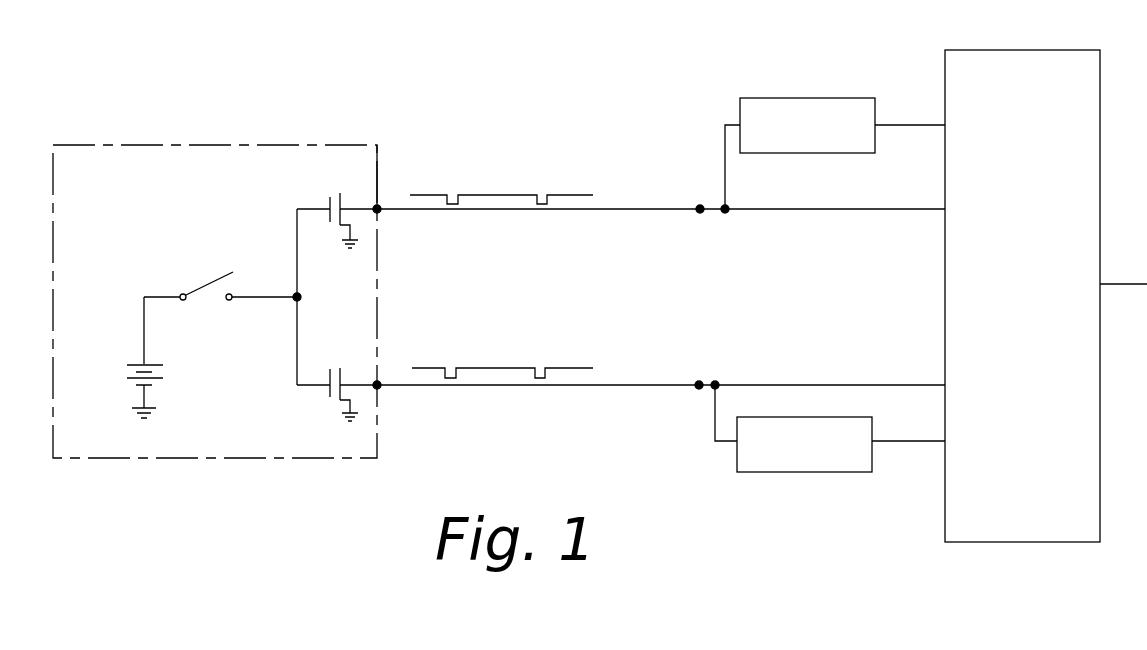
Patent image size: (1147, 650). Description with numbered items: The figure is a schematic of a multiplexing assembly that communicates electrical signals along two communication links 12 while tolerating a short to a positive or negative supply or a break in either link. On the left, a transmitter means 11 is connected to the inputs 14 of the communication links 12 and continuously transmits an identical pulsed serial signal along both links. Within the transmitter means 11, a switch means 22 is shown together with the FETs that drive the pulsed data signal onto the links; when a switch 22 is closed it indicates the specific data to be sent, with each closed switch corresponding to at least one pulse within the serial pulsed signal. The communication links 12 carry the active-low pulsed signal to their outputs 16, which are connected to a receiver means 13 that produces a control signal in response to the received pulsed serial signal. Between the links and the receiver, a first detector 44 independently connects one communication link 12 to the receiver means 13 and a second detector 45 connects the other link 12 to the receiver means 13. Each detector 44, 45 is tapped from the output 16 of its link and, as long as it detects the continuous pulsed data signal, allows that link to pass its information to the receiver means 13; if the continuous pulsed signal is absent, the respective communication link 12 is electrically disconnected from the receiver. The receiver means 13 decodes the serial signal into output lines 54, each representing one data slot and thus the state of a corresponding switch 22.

The transmitter means 11 is at (252, 145).
The communication links 12 is at (643, 212).
The receiver means 13 is at (963, 60).
The inputs 14 is at (379, 207).
The outputs 16 is at (700, 207).
The switch means 22 is at (209, 280).
The first detector 44 is at (860, 113).
The second detector 45 is at (782, 458).
The output lines 54 is at (1122, 284).